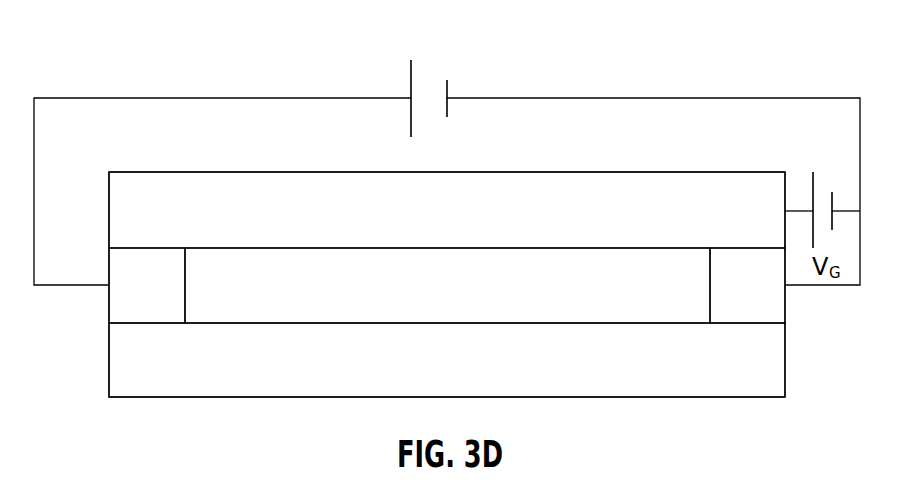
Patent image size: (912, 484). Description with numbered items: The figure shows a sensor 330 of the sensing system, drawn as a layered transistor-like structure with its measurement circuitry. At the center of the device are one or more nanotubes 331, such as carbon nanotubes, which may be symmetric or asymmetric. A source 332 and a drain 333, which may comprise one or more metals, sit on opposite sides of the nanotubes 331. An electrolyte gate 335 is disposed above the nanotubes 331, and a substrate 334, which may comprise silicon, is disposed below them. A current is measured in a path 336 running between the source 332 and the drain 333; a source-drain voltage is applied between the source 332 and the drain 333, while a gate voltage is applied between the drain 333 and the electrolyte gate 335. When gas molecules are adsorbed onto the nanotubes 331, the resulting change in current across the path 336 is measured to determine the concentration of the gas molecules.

The sensor 330 is at (90, 80).
The nanotubes 331 is at (449, 299).
The source 332 is at (166, 299).
The drain 333 is at (770, 299).
The substrate 334 is at (467, 374).
The electrolyte gate 335 is at (450, 229).
The path 336 is at (639, 84).